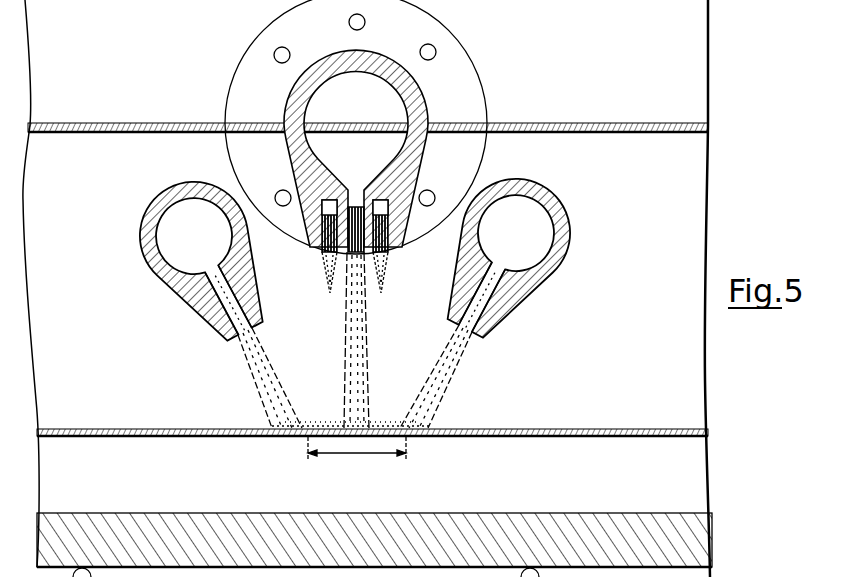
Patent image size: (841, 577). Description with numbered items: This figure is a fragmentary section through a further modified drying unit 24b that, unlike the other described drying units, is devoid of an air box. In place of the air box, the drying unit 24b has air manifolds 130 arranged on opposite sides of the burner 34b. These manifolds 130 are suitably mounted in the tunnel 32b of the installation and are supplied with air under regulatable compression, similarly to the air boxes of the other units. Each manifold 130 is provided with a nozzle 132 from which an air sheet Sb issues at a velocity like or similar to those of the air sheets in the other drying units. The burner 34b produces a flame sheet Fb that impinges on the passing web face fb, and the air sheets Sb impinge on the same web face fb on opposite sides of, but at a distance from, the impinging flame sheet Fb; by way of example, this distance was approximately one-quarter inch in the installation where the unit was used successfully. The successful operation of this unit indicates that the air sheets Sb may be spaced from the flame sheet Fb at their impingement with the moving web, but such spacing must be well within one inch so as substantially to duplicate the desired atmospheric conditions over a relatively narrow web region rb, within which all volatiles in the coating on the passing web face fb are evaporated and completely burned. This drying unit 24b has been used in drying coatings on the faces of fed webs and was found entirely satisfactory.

The drying unit 24b is at (596, 186).
The burner 34b is at (283, 150).
The air manifold 130 is at (146, 244).
The nozzle 132 is at (228, 296).
The flame sheet Fb is at (352, 382).
The air sheet Sb is at (266, 375).
The web face fb is at (502, 428).
The tunnel 32b is at (642, 378).
The web region rb is at (356, 453).